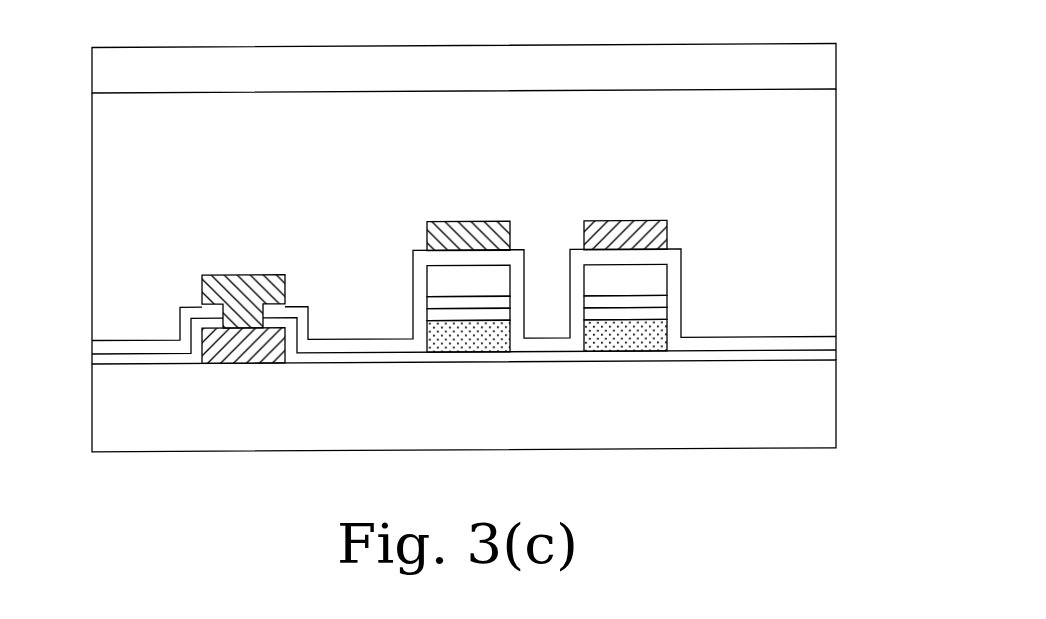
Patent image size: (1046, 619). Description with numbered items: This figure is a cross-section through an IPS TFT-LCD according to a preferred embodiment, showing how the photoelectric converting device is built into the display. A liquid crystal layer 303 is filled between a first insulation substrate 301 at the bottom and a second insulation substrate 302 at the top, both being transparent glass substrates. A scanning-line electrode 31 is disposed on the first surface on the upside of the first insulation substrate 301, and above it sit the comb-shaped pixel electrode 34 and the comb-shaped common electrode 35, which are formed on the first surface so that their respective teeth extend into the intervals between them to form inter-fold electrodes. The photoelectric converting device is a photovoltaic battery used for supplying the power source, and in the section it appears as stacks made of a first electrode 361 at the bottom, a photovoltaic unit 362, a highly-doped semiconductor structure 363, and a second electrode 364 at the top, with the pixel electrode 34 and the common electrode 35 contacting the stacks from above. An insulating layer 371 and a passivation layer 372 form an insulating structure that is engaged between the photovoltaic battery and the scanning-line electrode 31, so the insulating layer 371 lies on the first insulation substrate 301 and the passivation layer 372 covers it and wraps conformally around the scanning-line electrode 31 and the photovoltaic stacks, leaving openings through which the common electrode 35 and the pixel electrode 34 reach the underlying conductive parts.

The first insulation substrate 301 is at (817, 420).
The second insulation substrate 302 is at (818, 70).
The liquid crystal layer 303 is at (818, 232).
The scanning-line electrode 31 is at (257, 349).
The comb-shaped pixel electrode 34 is at (490, 230).
The comb-shaped common electrode 35 is at (235, 288).
The first electrode 361 is at (440, 340).
The photovoltaic unit 362 is at (440, 318).
The highly-doped semiconductor structure 363 is at (440, 306).
The second electrode 364 is at (438, 274).
The insulating layer 371 is at (110, 360).
The passivation layer 372 is at (110, 347).